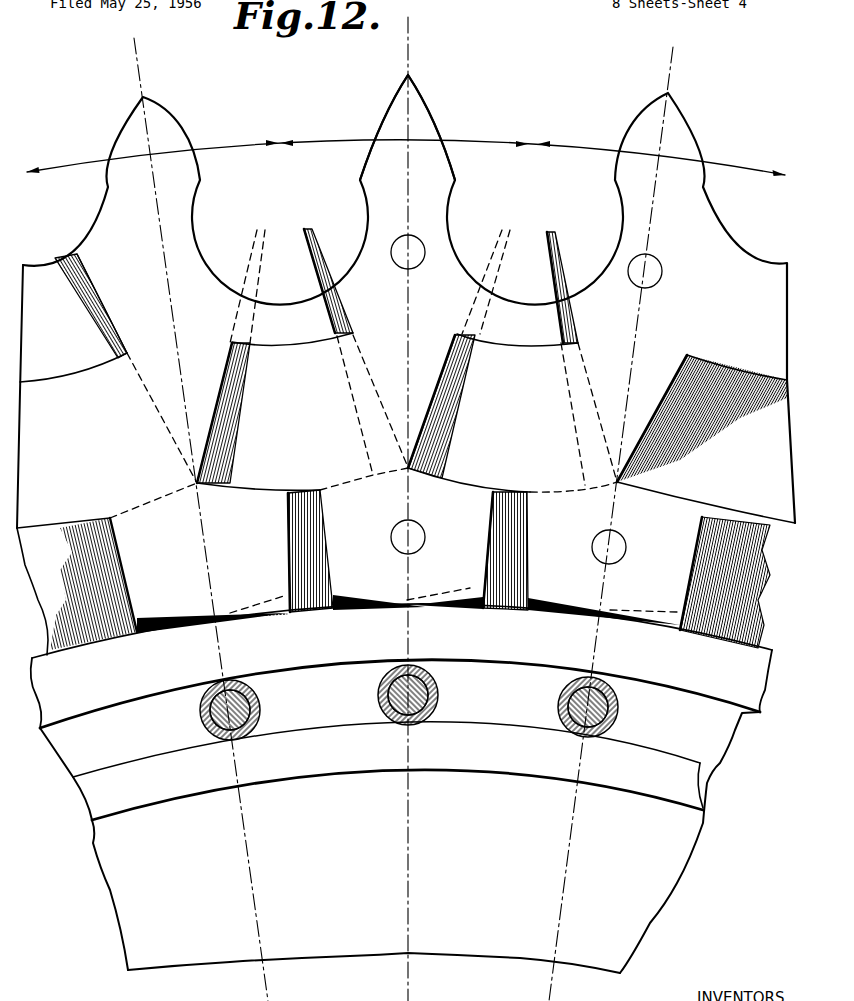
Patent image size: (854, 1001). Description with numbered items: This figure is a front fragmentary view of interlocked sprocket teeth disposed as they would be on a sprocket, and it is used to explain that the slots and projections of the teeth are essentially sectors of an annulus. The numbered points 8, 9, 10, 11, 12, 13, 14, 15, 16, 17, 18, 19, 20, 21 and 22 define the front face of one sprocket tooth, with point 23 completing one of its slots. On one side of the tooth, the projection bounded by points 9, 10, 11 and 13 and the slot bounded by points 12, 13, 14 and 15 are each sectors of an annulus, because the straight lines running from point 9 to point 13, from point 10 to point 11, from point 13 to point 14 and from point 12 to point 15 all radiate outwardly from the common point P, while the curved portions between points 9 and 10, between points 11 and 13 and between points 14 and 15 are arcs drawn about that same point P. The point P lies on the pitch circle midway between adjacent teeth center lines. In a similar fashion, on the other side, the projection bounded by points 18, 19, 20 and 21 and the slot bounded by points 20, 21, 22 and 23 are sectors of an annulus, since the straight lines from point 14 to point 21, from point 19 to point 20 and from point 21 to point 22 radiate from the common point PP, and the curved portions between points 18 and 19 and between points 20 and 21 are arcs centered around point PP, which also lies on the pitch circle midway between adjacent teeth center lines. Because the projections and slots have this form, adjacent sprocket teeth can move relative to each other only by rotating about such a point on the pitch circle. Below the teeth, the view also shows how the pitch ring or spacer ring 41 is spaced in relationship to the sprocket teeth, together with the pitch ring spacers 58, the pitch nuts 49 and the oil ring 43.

The numbered point 8 is at (412, 72).
The numbered point 9 is at (497, 230).
The numbered point 10 is at (546, 233).
The numbered point 11 is at (561, 341).
The numbered point 12 is at (512, 346).
The numbered point 13 is at (460, 333).
The numbered point 14 is at (364, 487).
The numbered point 15 is at (490, 493).
The numbered point 16 is at (481, 599).
The numbered point 17 is at (334, 594).
The numbered point 18 is at (321, 493).
The numbered point 19 is at (231, 485).
The numbered point 20 is at (252, 345).
The numbered point 21 is at (355, 333).
The numbered point 22 is at (315, 229).
The numbered point 23 is at (265, 228).
The pitch ring or spacer ring 41 is at (360, 652).
The oil ring 43 is at (492, 753).
The pitch nuts 49 is at (557, 705).
The pitch ring spacers 58 is at (620, 705).
The point on the pitch circle P is at (533, 144).
The point on the pitch circle PP is at (277, 143).